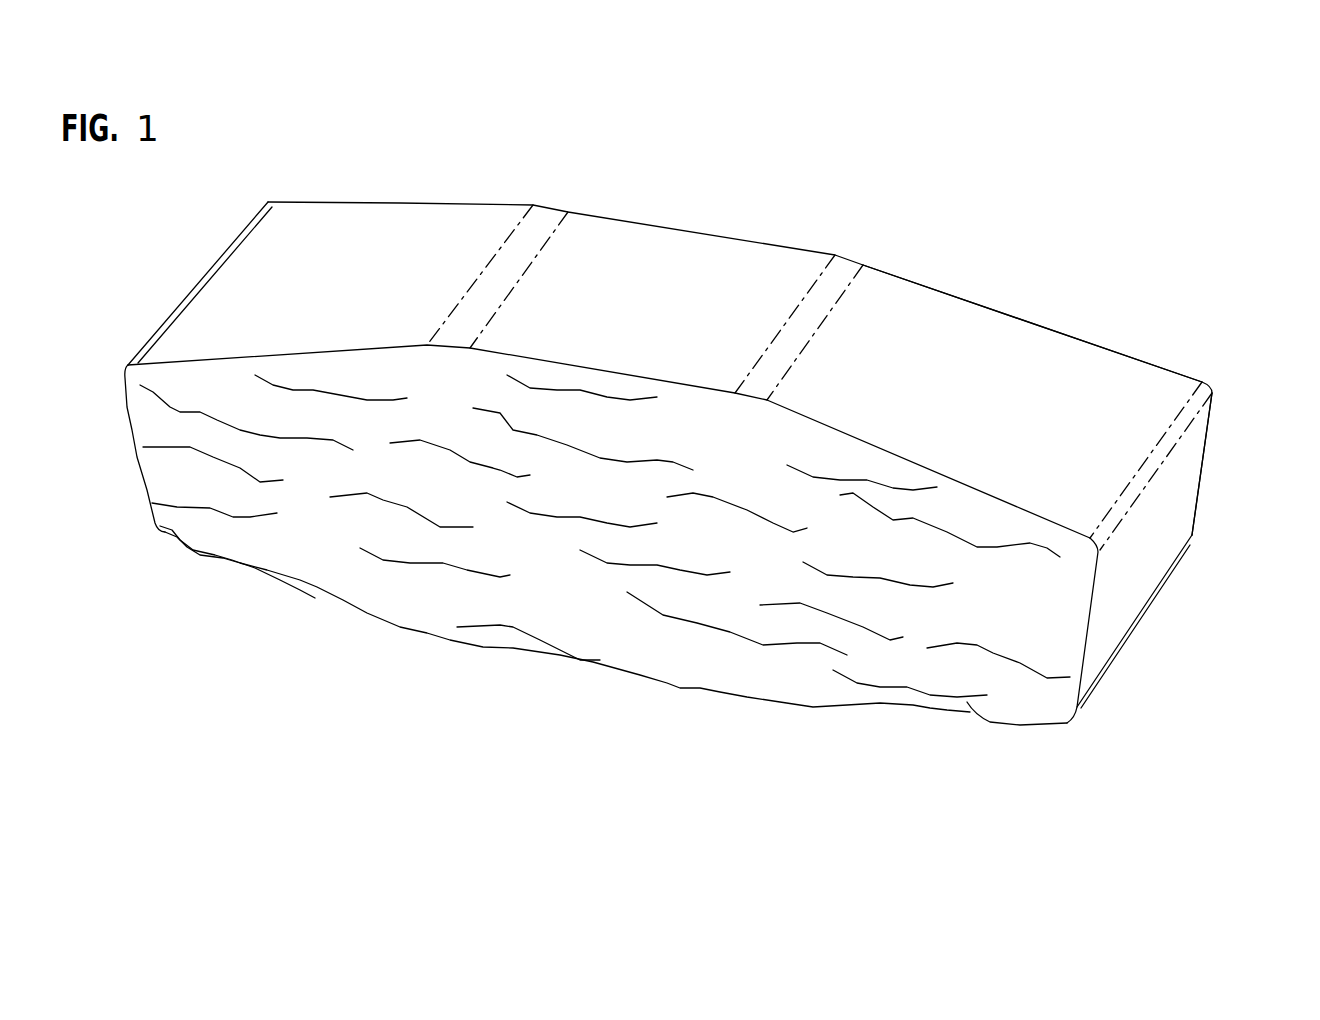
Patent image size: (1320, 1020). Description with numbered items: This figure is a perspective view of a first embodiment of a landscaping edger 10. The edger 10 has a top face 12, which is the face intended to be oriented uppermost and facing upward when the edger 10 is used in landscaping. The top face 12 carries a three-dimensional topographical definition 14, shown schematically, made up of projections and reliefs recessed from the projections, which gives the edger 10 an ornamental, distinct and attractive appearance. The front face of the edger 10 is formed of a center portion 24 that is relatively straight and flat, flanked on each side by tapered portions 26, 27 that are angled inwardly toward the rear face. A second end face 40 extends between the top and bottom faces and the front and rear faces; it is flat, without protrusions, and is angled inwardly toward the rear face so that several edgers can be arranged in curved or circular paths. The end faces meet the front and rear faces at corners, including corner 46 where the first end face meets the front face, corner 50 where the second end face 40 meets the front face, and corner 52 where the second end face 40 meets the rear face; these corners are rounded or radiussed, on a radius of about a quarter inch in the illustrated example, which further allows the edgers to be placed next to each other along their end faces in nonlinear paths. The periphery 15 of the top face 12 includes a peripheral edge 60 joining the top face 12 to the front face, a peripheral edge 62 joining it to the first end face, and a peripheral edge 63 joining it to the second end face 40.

The landscaping edger 10 is at (752, 150).
The top face 12 is at (664, 665).
The three-dimensional topographical definition 14 is at (561, 660).
The periphery 15 is at (875, 450).
The center portion 24 is at (750, 257).
The tapered portion 26 is at (364, 225).
The tapered portion 27 is at (1015, 333).
The second end face 40 is at (1158, 548).
The corner 46 is at (224, 244).
The corner 50 is at (1190, 418).
The corner 52 is at (1085, 697).
The peripheral edge 60 is at (568, 364).
The peripheral edge 62 is at (133, 430).
The peripheral edge 63 is at (1093, 600).